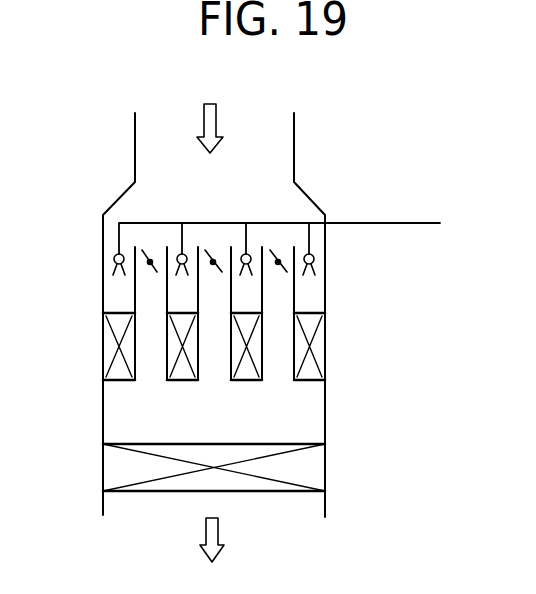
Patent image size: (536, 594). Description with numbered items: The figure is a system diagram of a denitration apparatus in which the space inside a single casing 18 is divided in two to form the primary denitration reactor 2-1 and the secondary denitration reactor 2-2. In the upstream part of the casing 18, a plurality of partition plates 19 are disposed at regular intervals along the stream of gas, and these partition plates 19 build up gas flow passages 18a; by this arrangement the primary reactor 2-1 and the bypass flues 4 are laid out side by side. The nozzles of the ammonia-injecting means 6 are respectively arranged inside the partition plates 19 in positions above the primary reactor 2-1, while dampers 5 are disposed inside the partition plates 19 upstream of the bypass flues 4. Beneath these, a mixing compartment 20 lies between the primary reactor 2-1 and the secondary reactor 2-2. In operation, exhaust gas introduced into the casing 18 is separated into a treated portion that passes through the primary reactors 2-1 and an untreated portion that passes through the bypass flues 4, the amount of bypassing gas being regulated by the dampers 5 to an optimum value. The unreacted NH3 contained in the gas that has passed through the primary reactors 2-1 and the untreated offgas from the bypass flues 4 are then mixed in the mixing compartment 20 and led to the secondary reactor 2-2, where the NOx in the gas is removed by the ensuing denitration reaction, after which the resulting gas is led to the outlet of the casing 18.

The primary denitration reactor 2-1 is at (110, 340).
The secondary denitration reactor 2-2 is at (120, 467).
The bypass flue 4 is at (277, 305).
The damper 5 is at (213, 262).
The ammonia-injecting means 6 is at (396, 222).
The casing 18 is at (327, 403).
The gas flow passage 18a is at (215, 290).
The partition plate 19 is at (277, 283).
The mixing compartment 20 is at (120, 395).